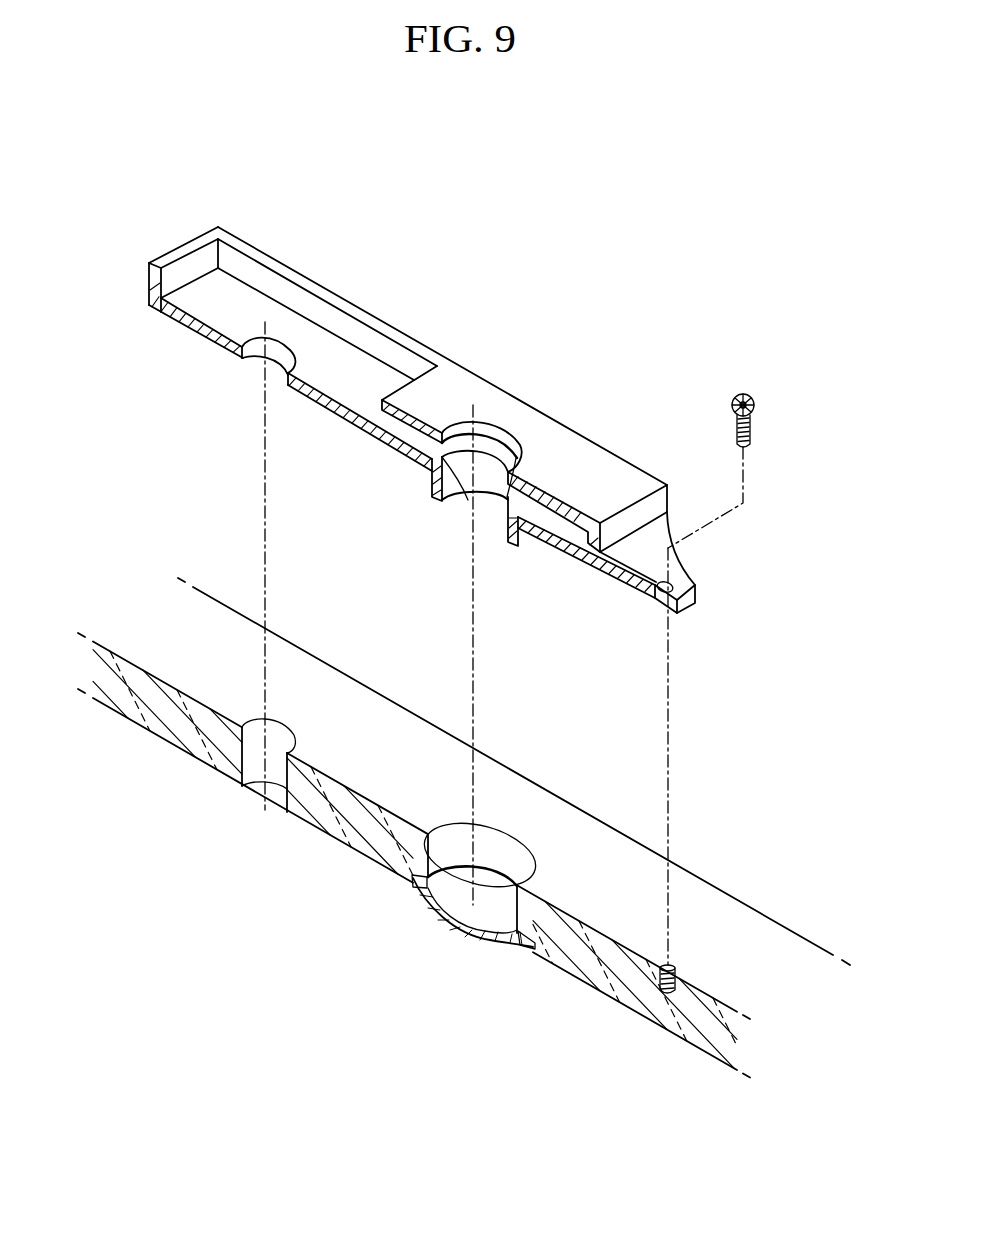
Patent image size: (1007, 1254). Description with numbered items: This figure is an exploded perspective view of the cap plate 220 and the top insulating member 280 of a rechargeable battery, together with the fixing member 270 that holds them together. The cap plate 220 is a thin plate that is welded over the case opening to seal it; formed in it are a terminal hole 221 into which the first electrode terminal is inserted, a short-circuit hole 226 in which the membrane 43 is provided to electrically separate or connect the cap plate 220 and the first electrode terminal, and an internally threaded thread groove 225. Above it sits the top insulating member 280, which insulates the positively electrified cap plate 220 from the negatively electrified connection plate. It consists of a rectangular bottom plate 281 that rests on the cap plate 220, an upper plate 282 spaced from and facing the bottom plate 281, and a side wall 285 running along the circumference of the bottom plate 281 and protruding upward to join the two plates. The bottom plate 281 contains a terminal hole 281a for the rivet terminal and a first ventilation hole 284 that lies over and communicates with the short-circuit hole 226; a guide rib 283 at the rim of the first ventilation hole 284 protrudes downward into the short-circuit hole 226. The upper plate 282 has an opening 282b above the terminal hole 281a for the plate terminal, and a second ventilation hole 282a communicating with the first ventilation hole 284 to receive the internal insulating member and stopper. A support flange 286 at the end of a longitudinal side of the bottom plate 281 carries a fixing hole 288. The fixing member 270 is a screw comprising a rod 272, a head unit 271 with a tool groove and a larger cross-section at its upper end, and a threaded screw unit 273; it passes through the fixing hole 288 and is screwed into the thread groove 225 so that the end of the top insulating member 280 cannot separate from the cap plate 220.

The top insulating member 280 is at (403, 298).
The side wall 285 is at (186, 270).
The opening 282b is at (318, 288).
The bottom plate 281 is at (225, 318).
The terminal hole 281a is at (260, 378).
The upper plate 282 is at (460, 380).
The second ventilation hole 282a is at (505, 435).
The first ventilation hole 284 is at (450, 500).
The guide rib 283 is at (526, 532).
The support flange 286 is at (648, 555).
The fixing hole 288 is at (700, 556).
The fixing member 270 is at (760, 400).
The head unit 271 is at (745, 397).
The rod 272 is at (737, 412).
The screw unit 273 is at (752, 436).
The cap plate 220 is at (778, 903).
The terminal hole 221 is at (258, 792).
The short-circuit hole 226 is at (540, 823).
The membrane 43 is at (462, 895).
The thread groove 225 is at (668, 968).